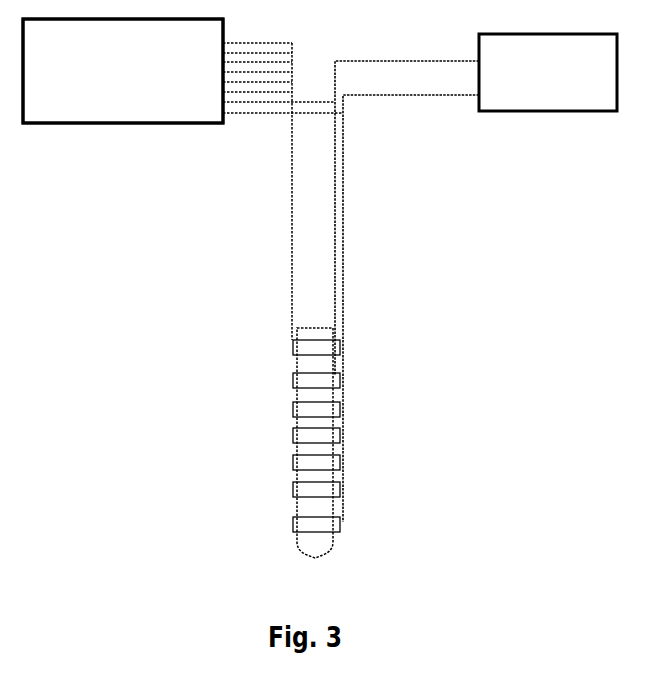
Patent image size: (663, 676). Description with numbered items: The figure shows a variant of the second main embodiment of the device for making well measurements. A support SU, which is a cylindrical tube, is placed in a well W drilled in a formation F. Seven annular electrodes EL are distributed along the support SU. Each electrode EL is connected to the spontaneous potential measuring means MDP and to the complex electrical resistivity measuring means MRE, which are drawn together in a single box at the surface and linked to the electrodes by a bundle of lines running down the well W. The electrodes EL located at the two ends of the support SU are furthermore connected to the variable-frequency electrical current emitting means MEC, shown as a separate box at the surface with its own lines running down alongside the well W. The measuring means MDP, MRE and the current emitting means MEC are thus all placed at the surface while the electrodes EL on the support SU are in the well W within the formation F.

The spontaneous potential measuring means MDP is at (123, 71).
The complex electrical resistivity measuring means MRE is at (123, 71).
The variable-frequency electrical current emitting means MEC is at (476, 278).
The well W is at (313, 191).
The formation F is at (316, 364).
The annular electrodes EL is at (340, 380).
The support SU is at (314, 503).